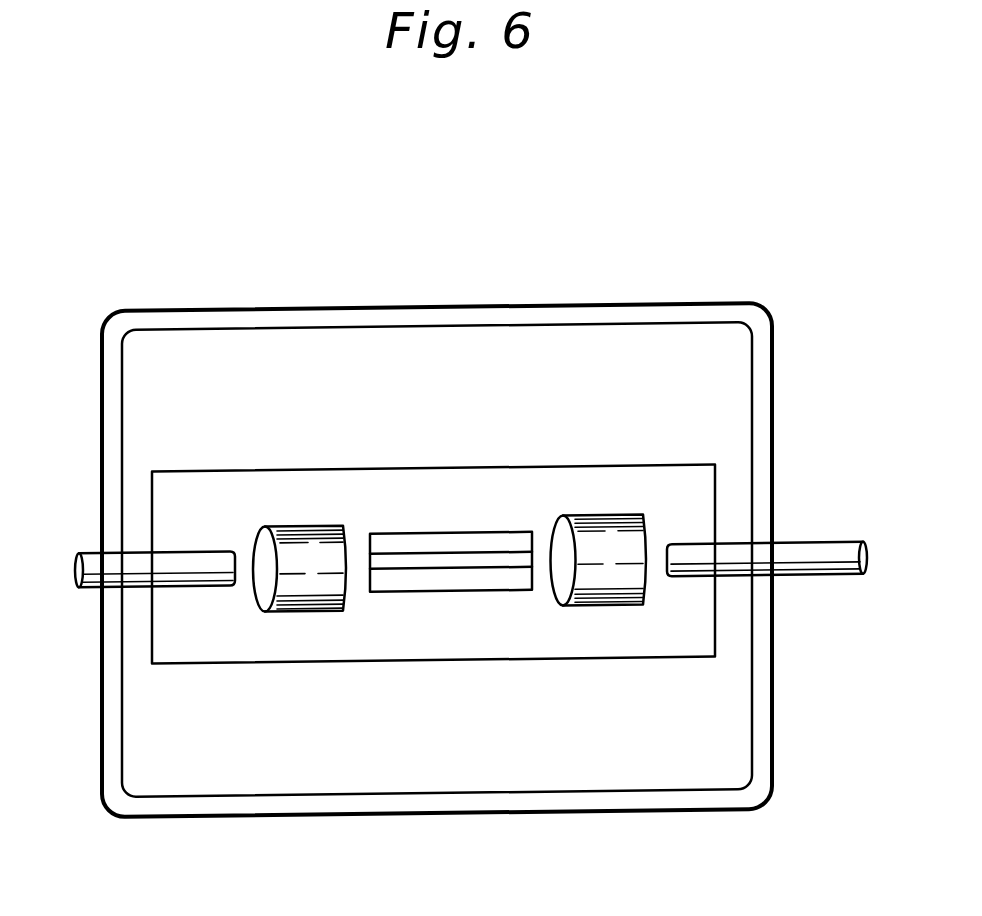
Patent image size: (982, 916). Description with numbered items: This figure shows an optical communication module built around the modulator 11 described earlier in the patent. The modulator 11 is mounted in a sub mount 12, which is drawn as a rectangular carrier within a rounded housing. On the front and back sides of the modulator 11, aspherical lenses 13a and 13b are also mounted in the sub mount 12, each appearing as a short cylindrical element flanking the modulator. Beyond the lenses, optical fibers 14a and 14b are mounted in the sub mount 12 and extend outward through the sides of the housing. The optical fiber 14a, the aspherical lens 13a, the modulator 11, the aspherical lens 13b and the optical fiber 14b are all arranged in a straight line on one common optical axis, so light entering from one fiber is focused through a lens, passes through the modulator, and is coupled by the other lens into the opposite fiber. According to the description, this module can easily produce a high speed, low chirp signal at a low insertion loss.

The modulator 11 is at (455, 577).
The sub mount 12 is at (692, 627).
The aspherical lens 13a is at (265, 558).
The aspherical lens 13b is at (623, 522).
The optical fiber 14a is at (144, 568).
The optical fiber 14b is at (787, 550).